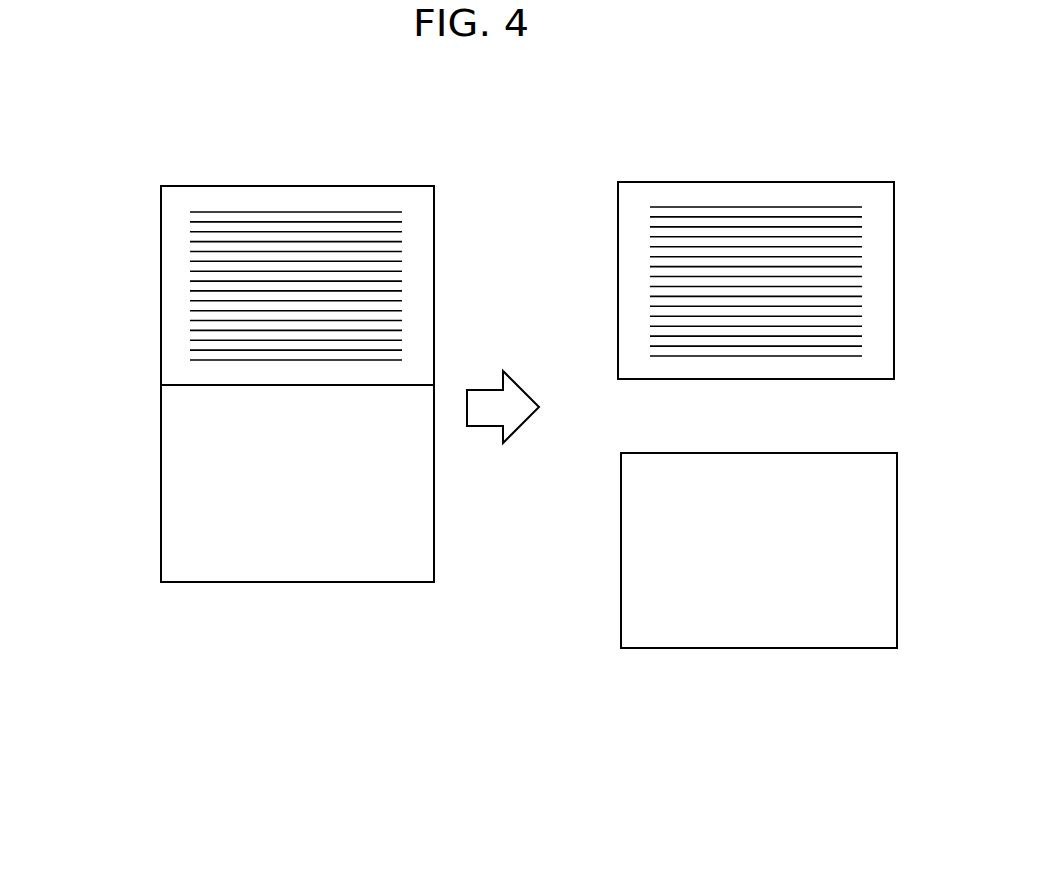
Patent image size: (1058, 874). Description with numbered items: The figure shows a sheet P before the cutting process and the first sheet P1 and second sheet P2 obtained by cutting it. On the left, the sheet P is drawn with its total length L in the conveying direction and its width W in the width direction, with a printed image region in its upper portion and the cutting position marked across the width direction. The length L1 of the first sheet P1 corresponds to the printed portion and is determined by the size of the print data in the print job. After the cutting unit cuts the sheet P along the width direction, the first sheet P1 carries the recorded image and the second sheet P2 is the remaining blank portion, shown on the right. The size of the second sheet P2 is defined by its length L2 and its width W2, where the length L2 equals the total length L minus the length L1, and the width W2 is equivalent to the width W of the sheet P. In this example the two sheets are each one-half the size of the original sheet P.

The sheet P is at (413, 158).
The first sheet P1 is at (894, 270).
The second sheet P2 is at (870, 550).
The length of the sheet L is at (161, 186).
The length of the first sheet L1 is at (134, 187).
The length of the second sheet L2 is at (621, 453).
The width of the sheet W is at (434, 582).
The width of the second sheet W2 is at (897, 648).